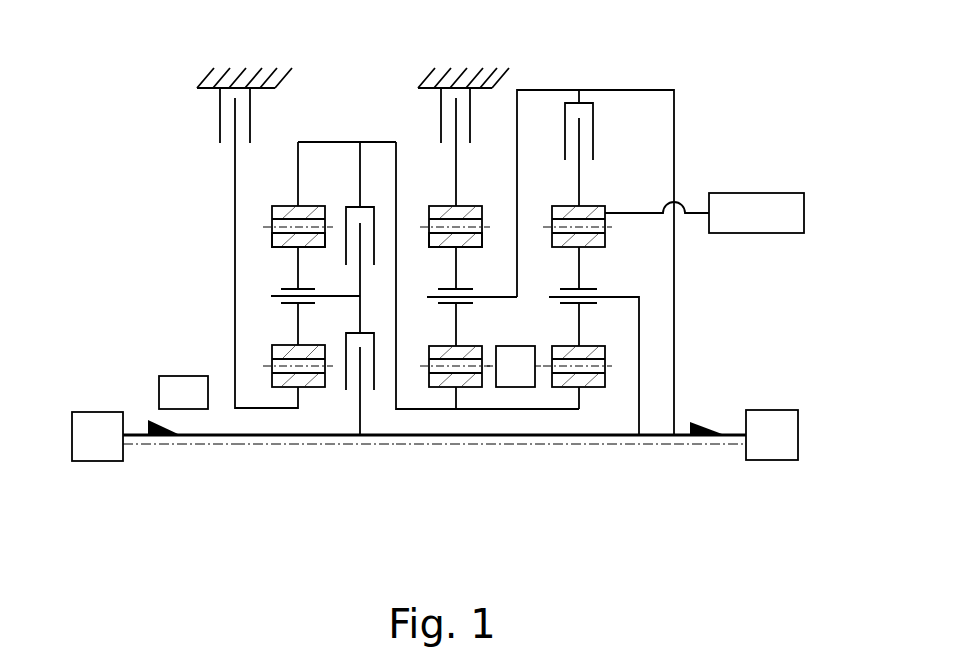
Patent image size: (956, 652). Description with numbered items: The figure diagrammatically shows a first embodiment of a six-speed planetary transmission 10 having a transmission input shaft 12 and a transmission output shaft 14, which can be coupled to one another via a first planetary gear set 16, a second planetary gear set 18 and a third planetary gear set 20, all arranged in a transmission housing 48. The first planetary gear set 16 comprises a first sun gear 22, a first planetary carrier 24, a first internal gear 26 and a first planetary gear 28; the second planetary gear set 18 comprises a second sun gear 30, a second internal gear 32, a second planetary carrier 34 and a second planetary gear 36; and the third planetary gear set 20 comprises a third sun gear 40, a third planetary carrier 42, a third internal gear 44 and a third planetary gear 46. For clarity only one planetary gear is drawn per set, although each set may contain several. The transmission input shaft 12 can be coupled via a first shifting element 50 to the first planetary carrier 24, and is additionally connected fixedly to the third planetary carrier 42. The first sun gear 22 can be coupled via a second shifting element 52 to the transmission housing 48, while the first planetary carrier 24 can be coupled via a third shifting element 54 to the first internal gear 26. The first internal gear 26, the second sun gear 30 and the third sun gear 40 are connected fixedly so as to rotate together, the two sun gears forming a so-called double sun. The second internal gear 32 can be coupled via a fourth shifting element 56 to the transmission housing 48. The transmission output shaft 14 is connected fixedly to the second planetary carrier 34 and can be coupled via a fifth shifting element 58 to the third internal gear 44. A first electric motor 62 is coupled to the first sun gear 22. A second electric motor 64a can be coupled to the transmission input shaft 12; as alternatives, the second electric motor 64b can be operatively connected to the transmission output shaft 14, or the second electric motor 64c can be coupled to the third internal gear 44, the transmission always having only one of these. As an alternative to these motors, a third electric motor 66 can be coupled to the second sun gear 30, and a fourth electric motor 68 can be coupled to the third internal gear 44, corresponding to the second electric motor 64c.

The 6-speed planetary transmission 10 is at (698, 78).
The transmission input shaft 12 is at (163, 437).
The transmission output shaft 14 is at (700, 425).
The first planetary gear set 16 is at (295, 468).
The second planetary gear set 18 is at (453, 467).
The third planetary gear set 20 is at (554, 476).
The first sun gear 22 is at (253, 412).
The first planetary carrier 24 is at (340, 297).
The first internal gear 26 is at (290, 215).
The first planetary gear 28 is at (285, 246).
The second sun gear 30 is at (455, 396).
The second internal gear 32 is at (463, 210).
The second planetary carrier 34 is at (500, 298).
The second planetary gear 36 is at (438, 241).
The third sun gear 40 is at (567, 410).
The third planetary carrier 42 is at (620, 297).
The third internal gear 44 is at (592, 212).
The third planetary gear 46 is at (590, 352).
The transmission housing 48 is at (249, 86).
The first shifting element 50 is at (351, 418).
The second shifting element 52 is at (190, 119).
The third shifting element 54 is at (362, 190).
The fourth shifting element 56 is at (482, 104).
The fifth shifting element 58 is at (605, 114).
The first electric motor 62 is at (183, 392).
The second electric motor 64a is at (97, 436).
The second electric motor 64b is at (772, 435).
The second electric motor 64c is at (756, 213).
The third electric motor 66 is at (515, 366).
The fourth electric motor 68 is at (756, 213).